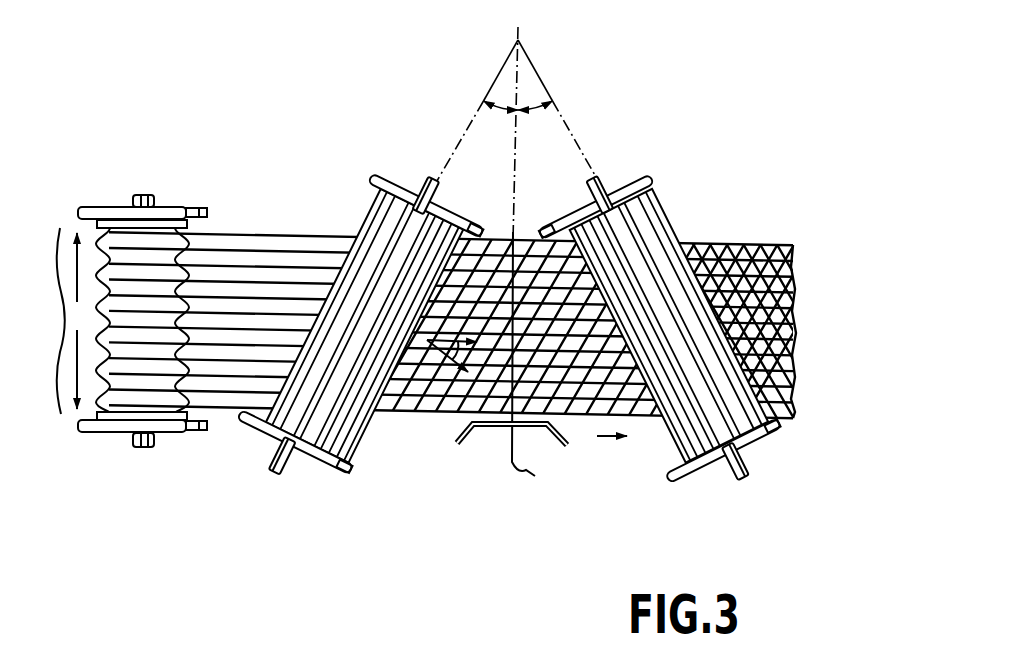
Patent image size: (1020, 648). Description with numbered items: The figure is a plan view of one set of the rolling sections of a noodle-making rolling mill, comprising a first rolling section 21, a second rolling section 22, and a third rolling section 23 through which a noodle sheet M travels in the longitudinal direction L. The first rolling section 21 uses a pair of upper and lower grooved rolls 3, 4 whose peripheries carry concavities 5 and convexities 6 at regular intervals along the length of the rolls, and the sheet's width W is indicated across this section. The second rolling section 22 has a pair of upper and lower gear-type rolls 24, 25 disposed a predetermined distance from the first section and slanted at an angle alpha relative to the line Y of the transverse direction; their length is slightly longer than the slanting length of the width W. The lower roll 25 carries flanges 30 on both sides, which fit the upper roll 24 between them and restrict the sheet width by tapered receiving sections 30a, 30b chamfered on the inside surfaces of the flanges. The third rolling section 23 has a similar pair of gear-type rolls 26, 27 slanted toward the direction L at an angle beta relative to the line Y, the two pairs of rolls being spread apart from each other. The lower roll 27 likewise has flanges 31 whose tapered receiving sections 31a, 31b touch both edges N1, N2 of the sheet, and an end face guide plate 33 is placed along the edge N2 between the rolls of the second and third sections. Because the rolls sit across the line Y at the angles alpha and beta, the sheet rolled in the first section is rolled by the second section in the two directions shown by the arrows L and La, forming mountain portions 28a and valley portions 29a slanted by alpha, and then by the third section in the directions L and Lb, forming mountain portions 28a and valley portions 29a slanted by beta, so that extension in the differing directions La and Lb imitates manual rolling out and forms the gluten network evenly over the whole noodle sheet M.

The first rolling section 21 is at (147, 160).
The upper grooved roll 3 is at (169, 204).
The lower grooved roll 4 is at (142, 426).
The concavities 5 is at (185, 270).
The convexities 6 is at (188, 390).
The width of the noodle sheet W is at (71, 321).
The noodle sheet M is at (282, 228).
The second rolling section 22 is at (397, 103).
The upper gear-type roll 24 is at (384, 168).
The lower gear-type roll 25 is at (295, 442).
The flanges 30 is at (408, 180).
The tapered receiving section 30a is at (352, 478).
The tapered receiving section 30b is at (482, 236).
The third rolling section 23 is at (636, 103).
The upper gear-type roll 26 is at (655, 155).
The lower gear-type roll 27 is at (723, 450).
The flanges 31 is at (623, 178).
The tapered receiving section 31a is at (670, 478).
The tapered receiving section 31b is at (665, 186).
The mountain portions 28a is at (780, 264).
The valley portions 29a is at (770, 292).
The rolling direction Lb is at (763, 248).
The rolling direction La is at (414, 404).
The edge of the noodle sheet N1 is at (726, 242).
The edge of the noodle sheet N2 is at (584, 418).
The longitudinal direction L is at (430, 405).
The line of the transverse direction Y is at (531, 362).
The end face guide plate 33 is at (487, 428).
The slanting angle alpha is at (476, 133).
The slanting angle beta is at (559, 112).